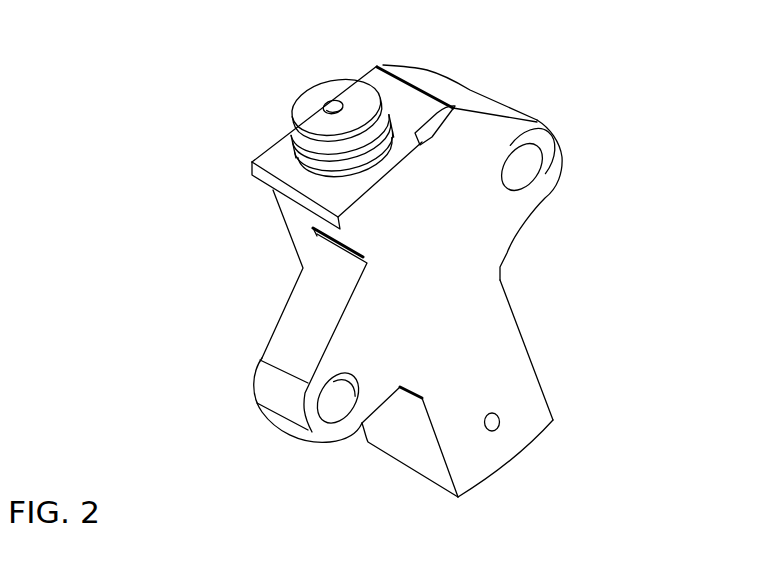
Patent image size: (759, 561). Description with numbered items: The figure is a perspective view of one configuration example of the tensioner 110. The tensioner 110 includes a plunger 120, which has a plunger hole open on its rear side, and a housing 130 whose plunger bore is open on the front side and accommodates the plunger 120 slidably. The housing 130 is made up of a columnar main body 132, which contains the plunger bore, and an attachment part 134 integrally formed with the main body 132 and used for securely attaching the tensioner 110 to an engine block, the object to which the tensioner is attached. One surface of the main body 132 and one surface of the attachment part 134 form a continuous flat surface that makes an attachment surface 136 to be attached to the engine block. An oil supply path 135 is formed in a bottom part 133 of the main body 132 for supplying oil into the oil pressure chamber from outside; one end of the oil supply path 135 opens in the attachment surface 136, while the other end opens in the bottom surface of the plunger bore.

The tensioner 110 is at (243, 160).
The plunger 120 is at (302, 93).
The housing 130 is at (507, 260).
The main body 132 is at (291, 217).
The bottom part 133 is at (392, 452).
The attachment part 134 is at (548, 135).
The oil supply path 135 is at (499, 422).
The attachment surface 136 is at (477, 330).